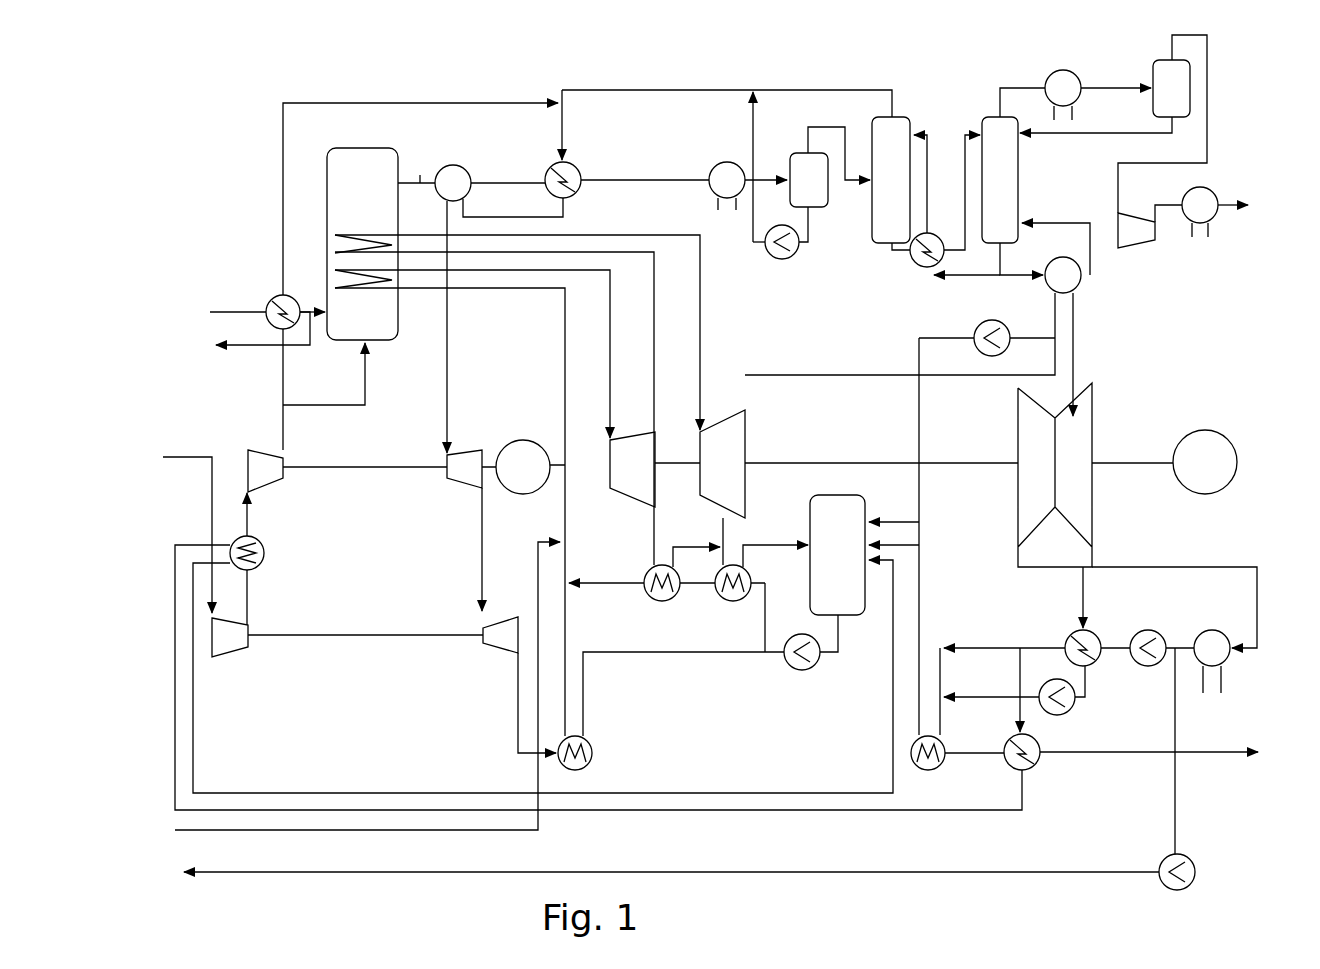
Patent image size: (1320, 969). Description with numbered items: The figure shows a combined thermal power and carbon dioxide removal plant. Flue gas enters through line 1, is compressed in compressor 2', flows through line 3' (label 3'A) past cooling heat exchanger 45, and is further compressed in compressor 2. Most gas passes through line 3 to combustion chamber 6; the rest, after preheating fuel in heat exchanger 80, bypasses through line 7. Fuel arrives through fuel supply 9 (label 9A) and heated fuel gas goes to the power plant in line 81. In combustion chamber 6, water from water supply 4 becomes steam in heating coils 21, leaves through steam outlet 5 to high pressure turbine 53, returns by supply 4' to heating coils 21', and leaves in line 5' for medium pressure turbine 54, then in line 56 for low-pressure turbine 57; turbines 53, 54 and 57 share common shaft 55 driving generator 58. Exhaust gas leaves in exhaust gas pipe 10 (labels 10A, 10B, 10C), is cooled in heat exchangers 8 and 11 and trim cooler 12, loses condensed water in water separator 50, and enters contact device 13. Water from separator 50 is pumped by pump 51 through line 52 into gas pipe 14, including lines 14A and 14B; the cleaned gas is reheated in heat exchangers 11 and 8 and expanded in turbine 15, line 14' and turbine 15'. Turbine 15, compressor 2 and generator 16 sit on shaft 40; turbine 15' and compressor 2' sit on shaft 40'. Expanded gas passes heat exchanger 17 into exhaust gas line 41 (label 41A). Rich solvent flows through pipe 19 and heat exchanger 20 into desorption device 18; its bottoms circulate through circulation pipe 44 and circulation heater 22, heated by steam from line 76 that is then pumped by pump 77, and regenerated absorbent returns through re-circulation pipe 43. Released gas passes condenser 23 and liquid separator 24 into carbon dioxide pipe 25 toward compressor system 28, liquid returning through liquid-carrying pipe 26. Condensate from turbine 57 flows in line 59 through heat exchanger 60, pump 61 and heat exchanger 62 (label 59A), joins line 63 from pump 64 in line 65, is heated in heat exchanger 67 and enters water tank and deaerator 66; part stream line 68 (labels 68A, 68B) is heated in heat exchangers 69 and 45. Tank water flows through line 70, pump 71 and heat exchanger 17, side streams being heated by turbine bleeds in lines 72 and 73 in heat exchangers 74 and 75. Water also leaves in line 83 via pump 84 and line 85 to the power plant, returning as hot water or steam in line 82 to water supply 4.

The natural gas feed line 1 is at (212, 500).
The first compressor 2 is at (265, 471).
The second compressor 2' is at (230, 637).
The compressed feed line to heater 3 is at (324, 389).
The feed line to compressor 3' is at (274, 514).
The feed line from heat exchanger 3'A is at (284, 597).
The heated fluid line 4 is at (472, 354).
The heated fluid line 5 is at (467, 512).
The heated fluid line to turbine 4' is at (536, 408).
The heated fluid line to turbine 5' is at (536, 332).
The fired heater 6 is at (343, 192).
The heater outlet line 7 is at (278, 200).
The mixer 8 is at (462, 165).
The air inlet line 9 is at (223, 312).
The preheated air line 9A is at (320, 308).
The synthesis gas line 10 is at (660, 185).
The heater outlet line 10A is at (420, 175).
The mixed gas line 10B is at (519, 178).
The heat exchanger 10C is at (623, 177).
The recycle line 11 is at (550, 156).
The mixer 12 is at (720, 163).
The first reactor 13 is at (891, 180).
The recycle line 14 is at (727, 110).
The gas line to turbine 14A is at (452, 318).
The recycle line 14B is at (842, 93).
The turbine interconnecting line 14' is at (446, 549).
The first turbine 15 is at (464, 469).
The second turbine 15' is at (500, 635).
The generator 16 is at (523, 467).
The heat exchanger 17 is at (593, 747).
The second reactor 18 is at (1000, 180).
The reactor feed line 19 is at (958, 135).
The heat exchanger 20 is at (917, 270).
The heater coil 21 is at (378, 342).
The heater coil 21' is at (385, 307).
The mixer 22 is at (1080, 285).
The mixer 23 is at (1080, 97).
The separator 24 is at (1171, 88).
The product line 25 is at (1207, 102).
The return line 26 is at (1070, 133).
The expander 28 is at (1193, 280).
The shaft 40 is at (365, 449).
The shaft 40' is at (365, 614).
The product outlet line 41 is at (1202, 752).
The turbine exhaust line 41A is at (517, 693).
The reactor inlet line 43 is at (930, 130).
The return line 44 is at (1068, 220).
The heat exchanger 45 is at (266, 553).
The reactor 50 is at (807, 167).
The pump 51 is at (790, 262).
The recycle line 52 is at (753, 137).
The turbine 53 is at (632, 469).
The turbine 54 is at (722, 464).
The shaft 55 is at (812, 462).
The gas line 56 is at (862, 366).
The turbine 57 is at (1055, 475).
The generator 58 is at (1164, 462).
The turbine exhaust line 59 is at (1188, 557).
The heat exchanger 59A is at (1117, 647).
The mixer 60 is at (1225, 634).
The pump 61 is at (1172, 630).
The line 62 is at (1093, 668).
The turbine exhaust line 63 is at (1078, 595).
The pump 64 is at (1073, 710).
The line to separator 65 is at (925, 585).
The separator 66 is at (837, 555).
The heat exchanger 67 is at (935, 770).
The return line 68 is at (440, 808).
The return line 68A is at (285, 810).
The return line 68B is at (243, 792).
The heat exchanger 69 is at (1035, 768).
The separator bottoms line 70 is at (840, 640).
The pump 71 is at (807, 672).
The turbine exhaust line 72 is at (652, 542).
The turbine exhaust line 73 is at (723, 510).
The heat exchanger 74 is at (655, 601).
The heat exchanger 75 is at (725, 601).
The turbine inlet line 76 is at (1078, 368).
The pump 77 is at (1008, 325).
The heat exchanger 80 is at (275, 295).
The flue gas outlet line 81 is at (262, 345).
The water line 82 is at (520, 832).
The line 83 is at (1177, 818).
The pump 84 is at (1165, 858).
The water return line 85 is at (992, 868).